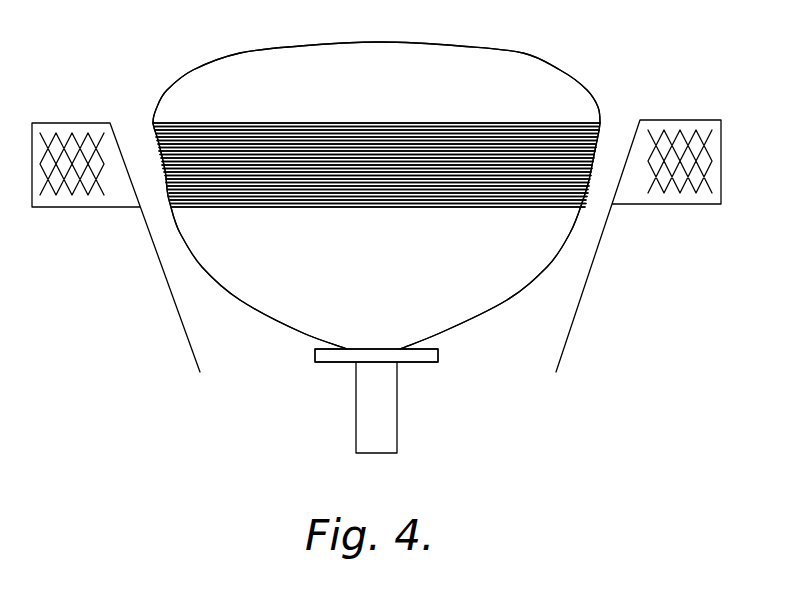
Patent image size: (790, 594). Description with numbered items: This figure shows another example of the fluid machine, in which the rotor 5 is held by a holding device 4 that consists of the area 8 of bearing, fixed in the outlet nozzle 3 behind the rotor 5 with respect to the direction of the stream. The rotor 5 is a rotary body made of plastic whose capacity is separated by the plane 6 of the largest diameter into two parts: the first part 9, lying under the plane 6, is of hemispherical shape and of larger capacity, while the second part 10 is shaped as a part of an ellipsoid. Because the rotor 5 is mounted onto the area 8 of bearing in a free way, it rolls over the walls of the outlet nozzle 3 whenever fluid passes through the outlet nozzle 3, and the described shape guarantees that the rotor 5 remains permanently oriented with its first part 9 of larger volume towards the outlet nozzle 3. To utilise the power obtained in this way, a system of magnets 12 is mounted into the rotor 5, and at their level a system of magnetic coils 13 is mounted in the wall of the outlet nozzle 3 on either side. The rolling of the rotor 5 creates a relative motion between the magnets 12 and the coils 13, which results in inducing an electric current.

The second part 10 is at (445, 60).
The first part 9 is at (237, 270).
The plane 6 is at (195, 122).
The magnets 12 is at (552, 140).
The magnetic coils 13 is at (92, 140).
The outlet nozzle 3 is at (148, 233).
The rotor 5 is at (552, 278).
The holding device 4 is at (328, 402).
The area of bearing 8 is at (410, 355).